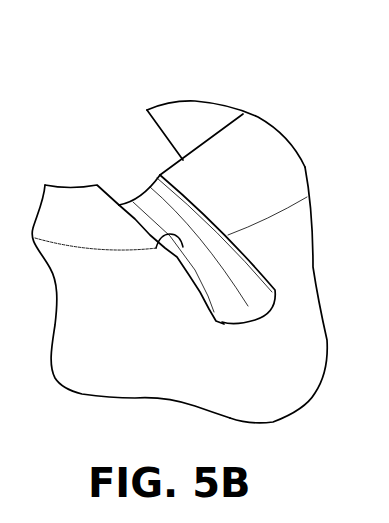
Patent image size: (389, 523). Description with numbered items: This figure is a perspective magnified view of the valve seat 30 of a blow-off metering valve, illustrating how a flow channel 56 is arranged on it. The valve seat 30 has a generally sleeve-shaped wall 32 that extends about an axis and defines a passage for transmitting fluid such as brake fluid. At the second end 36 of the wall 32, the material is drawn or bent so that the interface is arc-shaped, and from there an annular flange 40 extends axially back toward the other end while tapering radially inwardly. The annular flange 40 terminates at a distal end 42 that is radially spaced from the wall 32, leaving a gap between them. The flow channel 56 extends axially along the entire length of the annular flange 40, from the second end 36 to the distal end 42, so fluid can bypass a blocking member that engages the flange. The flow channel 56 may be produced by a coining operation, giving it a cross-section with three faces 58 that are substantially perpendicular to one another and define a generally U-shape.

The valve seat 30 is at (98, 358).
The wall 32 is at (308, 357).
The second end 36 is at (235, 155).
The annular flange 40 is at (212, 155).
The distal end 42 is at (73, 183).
The flow channel 56 is at (248, 310).
The faces 58 is at (217, 233).